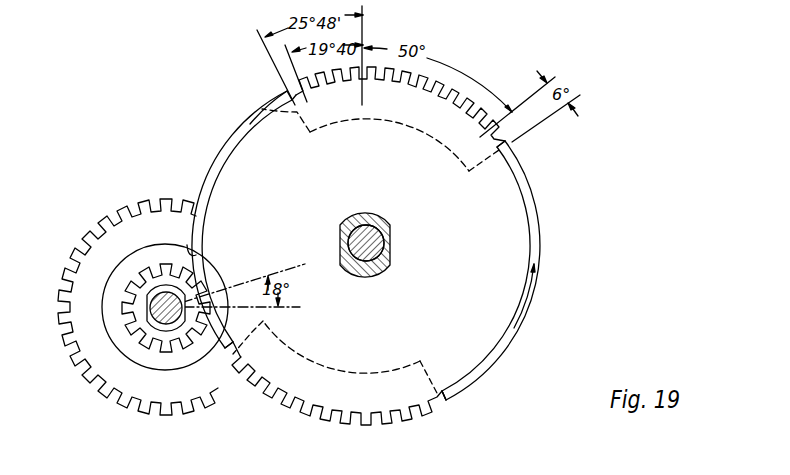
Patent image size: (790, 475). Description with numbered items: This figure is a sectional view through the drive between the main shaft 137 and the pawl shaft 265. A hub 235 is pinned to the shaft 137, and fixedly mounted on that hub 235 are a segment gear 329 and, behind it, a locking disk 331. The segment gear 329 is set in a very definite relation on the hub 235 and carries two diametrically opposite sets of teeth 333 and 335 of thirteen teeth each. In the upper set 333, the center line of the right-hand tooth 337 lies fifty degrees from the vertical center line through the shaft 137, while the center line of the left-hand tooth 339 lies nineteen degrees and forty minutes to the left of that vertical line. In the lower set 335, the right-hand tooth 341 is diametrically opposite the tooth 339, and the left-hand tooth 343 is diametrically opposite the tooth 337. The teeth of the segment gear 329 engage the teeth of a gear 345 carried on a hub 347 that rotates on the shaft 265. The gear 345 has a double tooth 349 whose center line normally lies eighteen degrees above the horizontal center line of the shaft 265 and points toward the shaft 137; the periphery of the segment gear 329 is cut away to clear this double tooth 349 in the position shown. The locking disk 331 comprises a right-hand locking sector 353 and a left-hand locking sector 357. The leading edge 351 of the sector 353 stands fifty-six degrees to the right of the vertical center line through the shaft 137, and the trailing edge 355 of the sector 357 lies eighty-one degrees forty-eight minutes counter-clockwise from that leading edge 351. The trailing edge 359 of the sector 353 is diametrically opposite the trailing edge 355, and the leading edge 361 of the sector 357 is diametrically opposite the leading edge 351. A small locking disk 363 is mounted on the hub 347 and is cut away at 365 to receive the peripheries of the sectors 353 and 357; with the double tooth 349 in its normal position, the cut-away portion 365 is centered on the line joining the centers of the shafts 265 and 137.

The shaft 137 is at (376, 244).
The hub 235 is at (389, 268).
The shaft 265 is at (152, 300).
The segment gear 329 is at (368, 257).
The locking disk 331 is at (412, 125).
The set of teeth 333 is at (417, 79).
The set of teeth 335 is at (307, 417).
The right-hand tooth 337 is at (500, 131).
The left-hand tooth 339 is at (298, 80).
The end of lower tooth segment 341 is at (438, 406).
The left-hand tooth 343 is at (233, 364).
The gear 345 is at (145, 322).
The hub 347 is at (147, 297).
The double tooth 349 is at (197, 291).
The leading edge 351 is at (476, 172).
The right-hand locking sector 353 is at (538, 234).
The trailing edge 355 is at (262, 112).
The left-hand locking sector 357 is at (222, 160).
The trailing edge 359 is at (432, 378).
The leading edge 361 is at (268, 318).
The small locking disk 363 is at (148, 254).
The cut-away portion 365 is at (187, 245).